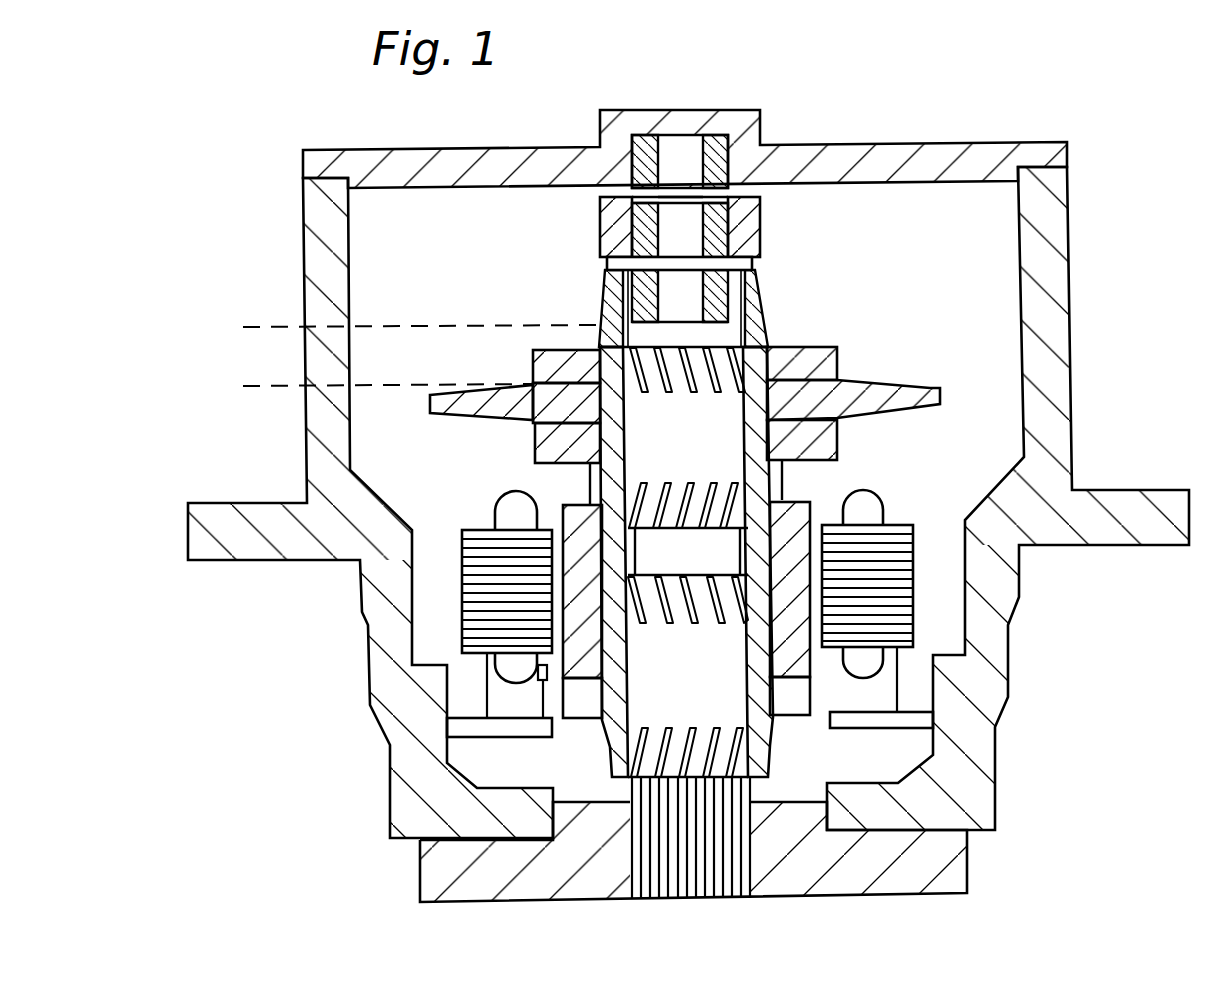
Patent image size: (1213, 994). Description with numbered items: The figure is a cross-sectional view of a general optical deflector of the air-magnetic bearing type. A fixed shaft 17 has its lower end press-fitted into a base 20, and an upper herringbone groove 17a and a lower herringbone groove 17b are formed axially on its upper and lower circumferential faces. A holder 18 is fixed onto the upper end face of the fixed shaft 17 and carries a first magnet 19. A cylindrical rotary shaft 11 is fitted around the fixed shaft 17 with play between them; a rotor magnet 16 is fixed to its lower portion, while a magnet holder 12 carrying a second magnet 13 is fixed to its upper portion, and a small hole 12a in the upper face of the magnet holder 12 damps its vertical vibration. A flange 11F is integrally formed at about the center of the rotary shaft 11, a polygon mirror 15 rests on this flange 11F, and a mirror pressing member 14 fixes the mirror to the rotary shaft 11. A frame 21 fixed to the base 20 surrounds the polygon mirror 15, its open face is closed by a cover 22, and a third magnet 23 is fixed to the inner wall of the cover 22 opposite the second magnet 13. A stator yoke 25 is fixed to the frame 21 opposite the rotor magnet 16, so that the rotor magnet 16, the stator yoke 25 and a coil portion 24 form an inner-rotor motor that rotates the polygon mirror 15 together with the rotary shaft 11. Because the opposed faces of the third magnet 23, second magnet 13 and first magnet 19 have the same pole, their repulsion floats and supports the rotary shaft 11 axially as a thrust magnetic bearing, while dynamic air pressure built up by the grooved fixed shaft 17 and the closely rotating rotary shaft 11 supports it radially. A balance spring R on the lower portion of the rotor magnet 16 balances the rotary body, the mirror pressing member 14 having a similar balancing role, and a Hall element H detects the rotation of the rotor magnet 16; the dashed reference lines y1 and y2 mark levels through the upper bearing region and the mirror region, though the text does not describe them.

The rotary shaft 11 is at (595, 496).
The flange 11F is at (818, 436).
The magnet holder 12 is at (762, 212).
The small hole 12a is at (680, 200).
The second magnet 13 is at (640, 232).
The mirror pressing member 14 is at (838, 356).
The polygon mirror 15 is at (936, 388).
The rotor magnet 16 is at (567, 678).
The fixed shaft 17 is at (633, 410).
The upper herringbone groove 17a is at (660, 367).
The lower herringbone groove 17b is at (693, 612).
The holder 18 is at (727, 333).
The first magnet 19 is at (730, 283).
The base 20 is at (940, 856).
The frame 21 is at (1129, 500).
The cover 22 is at (515, 150).
The third magnet 23 is at (645, 142).
The coil portion 24 is at (875, 658).
The stator yoke 25 is at (460, 622).
The Hall element H is at (538, 672).
The balance spring R is at (797, 707).
The reference line y1 is at (403, 330).
The reference line y2 is at (370, 385).